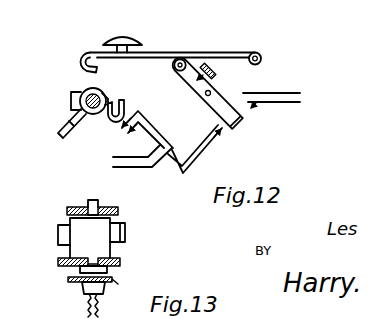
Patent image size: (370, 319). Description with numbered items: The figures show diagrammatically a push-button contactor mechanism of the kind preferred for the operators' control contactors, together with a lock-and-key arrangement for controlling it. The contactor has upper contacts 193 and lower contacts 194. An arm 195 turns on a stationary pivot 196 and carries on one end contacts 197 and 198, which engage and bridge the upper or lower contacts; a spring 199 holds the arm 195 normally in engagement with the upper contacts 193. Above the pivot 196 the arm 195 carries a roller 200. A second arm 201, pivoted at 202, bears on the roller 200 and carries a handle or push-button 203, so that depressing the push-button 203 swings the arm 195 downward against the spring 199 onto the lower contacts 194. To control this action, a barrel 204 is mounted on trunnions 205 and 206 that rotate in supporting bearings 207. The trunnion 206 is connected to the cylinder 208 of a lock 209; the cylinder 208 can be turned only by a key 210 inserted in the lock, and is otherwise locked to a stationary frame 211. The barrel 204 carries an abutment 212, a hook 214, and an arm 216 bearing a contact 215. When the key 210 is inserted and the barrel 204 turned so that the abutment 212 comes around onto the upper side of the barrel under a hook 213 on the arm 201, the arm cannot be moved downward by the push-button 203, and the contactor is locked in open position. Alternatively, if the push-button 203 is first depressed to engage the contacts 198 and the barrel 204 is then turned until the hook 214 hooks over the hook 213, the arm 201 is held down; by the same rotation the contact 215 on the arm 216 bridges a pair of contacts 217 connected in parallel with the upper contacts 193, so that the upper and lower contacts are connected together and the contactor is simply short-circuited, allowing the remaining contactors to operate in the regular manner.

In FIG. 12, the upper contacts 193 is at (217, 112).
In FIG. 12, the lower contacts 194 is at (239, 100).
In FIG. 12, the arm 195 is at (212, 104).
In FIG. 12, the stationary pivot 196 is at (205, 94).
In FIG. 12, the contact 197 is at (233, 129).
In FIG. 12, the contact 198 is at (244, 122).
In FIG. 12, the spring 199 is at (214, 76).
In FIG. 12, the roller 200 is at (177, 70).
In FIG. 12, the arm 201 is at (163, 52).
In FIG. 12, the pivot 202 is at (262, 56).
In FIG. 12, the handle or push-button 203 is at (121, 38).
In FIG. 12, the barrel 204 is at (102, 91).
In FIG. 13, the barrel 204 is at (111, 250).
In FIG. 13, the trunnion 205 is at (94, 200).
In FIG. 13, the trunnion 206 is at (102, 271).
In FIG. 13, the supporting bearings 207 is at (118, 208).
In FIG. 13, the cylinder 208 is at (80, 277).
In FIG. 13, the lock 209 is at (83, 289).
In FIG. 13, the key 210 is at (98, 306).
In FIG. 13, the stationary frame 211 is at (110, 283).
In FIG. 12, the abutment 212 is at (71, 99).
In FIG. 13, the abutment 212 is at (58, 236).
In FIG. 12, the hook 213 is at (92, 72).
In FIG. 12, the hook 214 is at (125, 101).
In FIG. 13, the hook 214 is at (125, 230).
In FIG. 12, the contact 215 is at (62, 140).
In FIG. 12, the arm 216 is at (69, 120).
In FIG. 12, the pair of contacts 217 is at (121, 129).